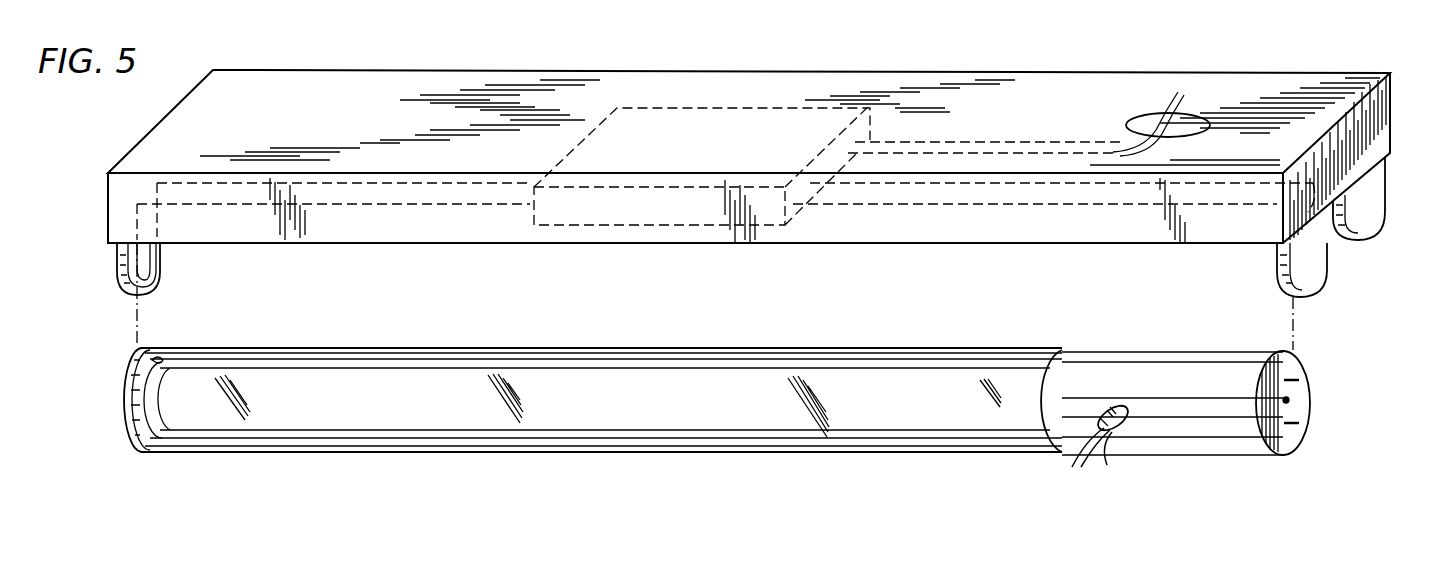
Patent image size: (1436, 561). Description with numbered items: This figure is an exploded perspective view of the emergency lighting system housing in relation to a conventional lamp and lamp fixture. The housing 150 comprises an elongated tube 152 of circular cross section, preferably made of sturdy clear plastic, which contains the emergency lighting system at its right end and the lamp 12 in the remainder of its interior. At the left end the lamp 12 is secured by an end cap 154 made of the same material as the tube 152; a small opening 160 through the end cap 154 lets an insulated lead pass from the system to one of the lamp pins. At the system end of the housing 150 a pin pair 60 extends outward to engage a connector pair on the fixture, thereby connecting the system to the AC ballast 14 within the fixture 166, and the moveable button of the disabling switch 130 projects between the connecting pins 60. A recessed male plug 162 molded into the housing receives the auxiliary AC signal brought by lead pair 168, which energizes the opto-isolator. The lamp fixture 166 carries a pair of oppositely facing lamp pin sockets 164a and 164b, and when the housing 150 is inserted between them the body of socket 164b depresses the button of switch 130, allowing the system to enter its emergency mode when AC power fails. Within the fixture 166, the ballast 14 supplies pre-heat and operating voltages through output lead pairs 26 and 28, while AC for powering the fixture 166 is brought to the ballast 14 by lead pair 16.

The lamp 12 is at (740, 411).
The AC ballast 14 is at (685, 215).
The lead pair 16 is at (1181, 90).
The output leads 26 is at (1013, 210).
The output leads 28 is at (333, 213).
The pin pair 60 is at (1270, 417).
The disabling switch 130 is at (1254, 440).
The housing 150 is at (665, 413).
The elongated tube 152 is at (420, 411).
The end cap 154 is at (136, 455).
The small opening 160 is at (160, 357).
The recessed male plug 162 is at (1126, 405).
The lamp pin socket 164a is at (118, 266).
The lamp pin socket 164b is at (1296, 288).
The lamp fixture 166 is at (719, 196).
The lead pair 168 is at (1083, 463).